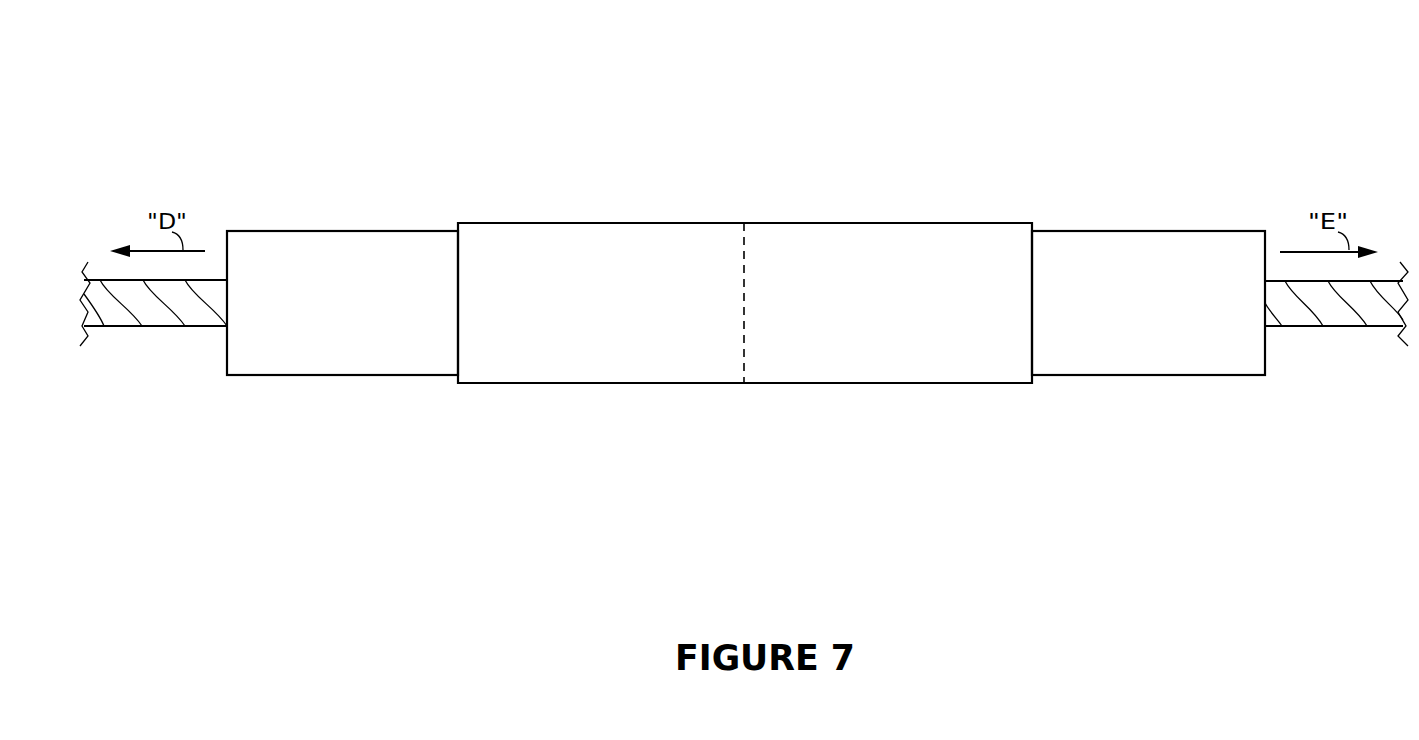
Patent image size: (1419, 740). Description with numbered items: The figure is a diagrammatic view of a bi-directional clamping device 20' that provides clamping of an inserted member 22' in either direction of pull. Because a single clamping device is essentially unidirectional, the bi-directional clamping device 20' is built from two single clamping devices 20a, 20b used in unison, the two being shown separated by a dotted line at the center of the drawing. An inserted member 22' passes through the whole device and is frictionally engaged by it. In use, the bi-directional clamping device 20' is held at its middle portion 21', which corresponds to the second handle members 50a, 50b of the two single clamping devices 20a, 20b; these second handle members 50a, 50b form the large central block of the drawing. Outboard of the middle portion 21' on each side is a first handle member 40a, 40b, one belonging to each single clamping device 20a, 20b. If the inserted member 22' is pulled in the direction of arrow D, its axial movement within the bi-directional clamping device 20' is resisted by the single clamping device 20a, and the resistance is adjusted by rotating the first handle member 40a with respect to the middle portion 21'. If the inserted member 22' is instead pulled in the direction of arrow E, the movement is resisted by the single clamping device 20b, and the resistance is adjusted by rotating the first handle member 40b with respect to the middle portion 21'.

The bi-directional clamping device 20' is at (746, 298).
The single clamping device 20a is at (421, 442).
The single clamping device 20b is at (1065, 442).
The first handle member 40a is at (320, 231).
The first handle member 40b is at (1150, 231).
The second handle member 50a is at (547, 223).
The second handle member 50b is at (877, 223).
The middle portion 21' is at (747, 349).
The inserted member 22' is at (744, 340).